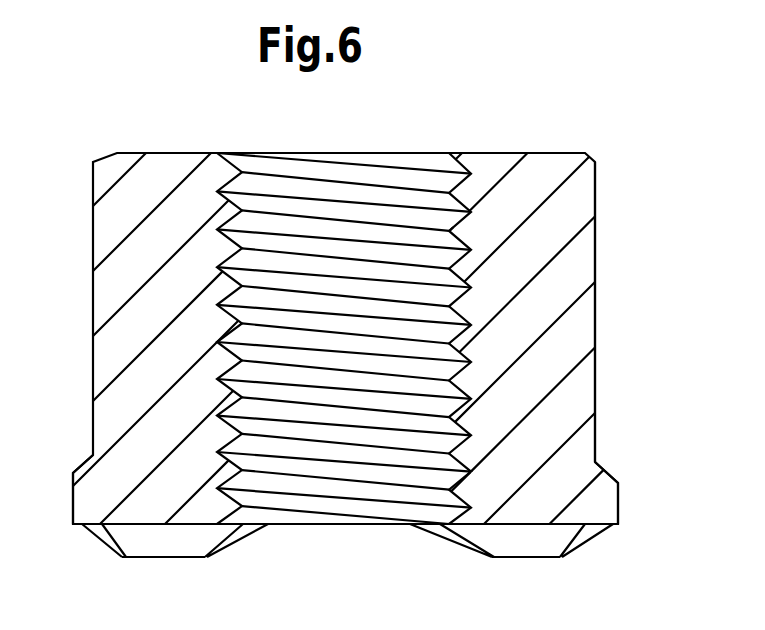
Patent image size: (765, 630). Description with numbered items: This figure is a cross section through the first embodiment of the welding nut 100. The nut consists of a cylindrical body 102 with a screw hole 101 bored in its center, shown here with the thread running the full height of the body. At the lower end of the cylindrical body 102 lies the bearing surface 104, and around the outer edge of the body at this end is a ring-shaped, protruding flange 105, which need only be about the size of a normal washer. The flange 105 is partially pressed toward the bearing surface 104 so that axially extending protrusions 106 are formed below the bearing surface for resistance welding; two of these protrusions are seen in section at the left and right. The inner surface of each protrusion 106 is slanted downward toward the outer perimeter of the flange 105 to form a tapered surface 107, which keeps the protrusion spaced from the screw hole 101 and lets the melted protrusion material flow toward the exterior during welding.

The welding nut 100 is at (170, 140).
The screw hole 101 is at (432, 170).
The cylindrical body 102 is at (595, 272).
The bearing surface 104 is at (472, 537).
The flange 105 is at (618, 482).
The protrusion 106 is at (90, 533).
The tapered surface 107 is at (170, 540).